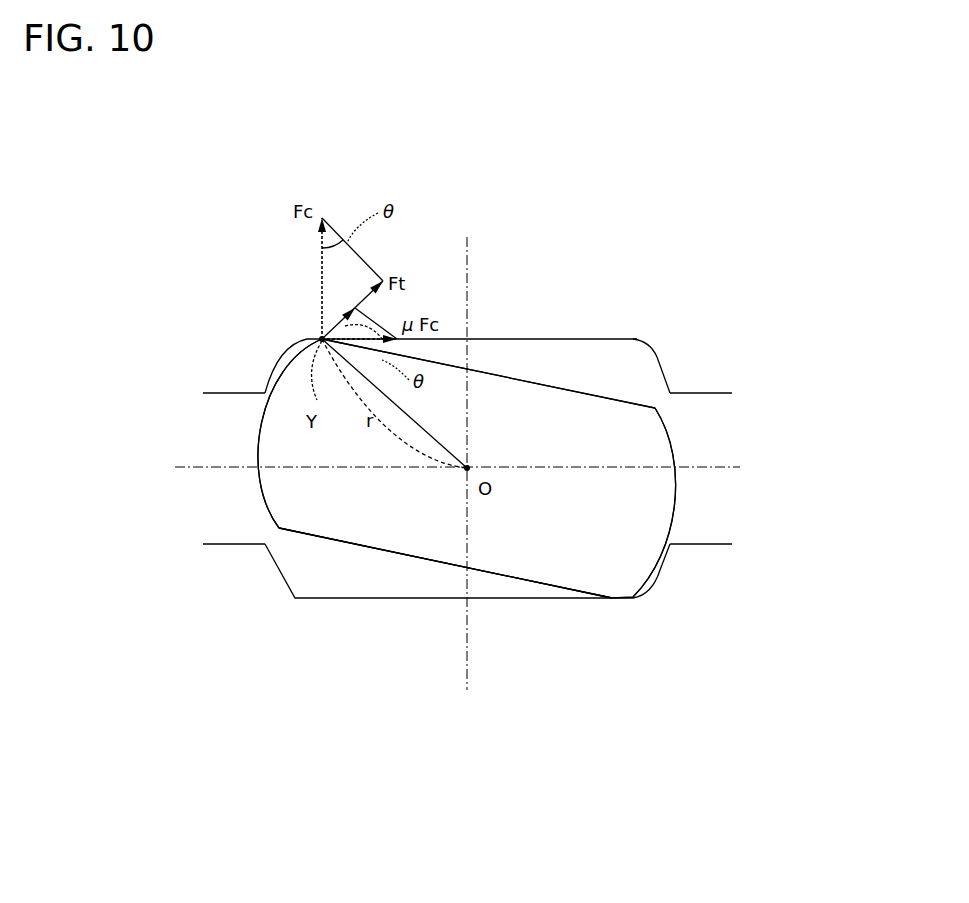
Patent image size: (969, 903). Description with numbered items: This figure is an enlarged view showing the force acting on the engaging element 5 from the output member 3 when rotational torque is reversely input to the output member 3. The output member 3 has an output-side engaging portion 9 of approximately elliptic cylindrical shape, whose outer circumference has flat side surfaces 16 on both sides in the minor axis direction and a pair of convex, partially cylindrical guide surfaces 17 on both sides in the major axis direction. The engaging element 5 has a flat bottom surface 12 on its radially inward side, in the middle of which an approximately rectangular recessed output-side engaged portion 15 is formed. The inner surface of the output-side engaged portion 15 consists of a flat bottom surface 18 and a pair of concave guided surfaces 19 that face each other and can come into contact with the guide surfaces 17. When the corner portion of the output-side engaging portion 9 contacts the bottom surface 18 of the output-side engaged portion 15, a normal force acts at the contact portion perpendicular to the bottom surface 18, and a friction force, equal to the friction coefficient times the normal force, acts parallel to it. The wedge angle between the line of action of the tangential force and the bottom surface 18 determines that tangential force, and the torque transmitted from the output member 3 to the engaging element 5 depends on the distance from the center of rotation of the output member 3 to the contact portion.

The output member 3 is at (467, 502).
The engaging element 5 is at (480, 453).
The output-side engaging portion 9 is at (420, 525).
The bottom surface 12 is at (240, 393).
The output-side engaged portion 15 is at (567, 339).
The side surfaces 16 is at (531, 382).
The guide surfaces 17 is at (262, 437).
The bottom surface 18 is at (487, 339).
The guided surfaces 19 is at (292, 345).